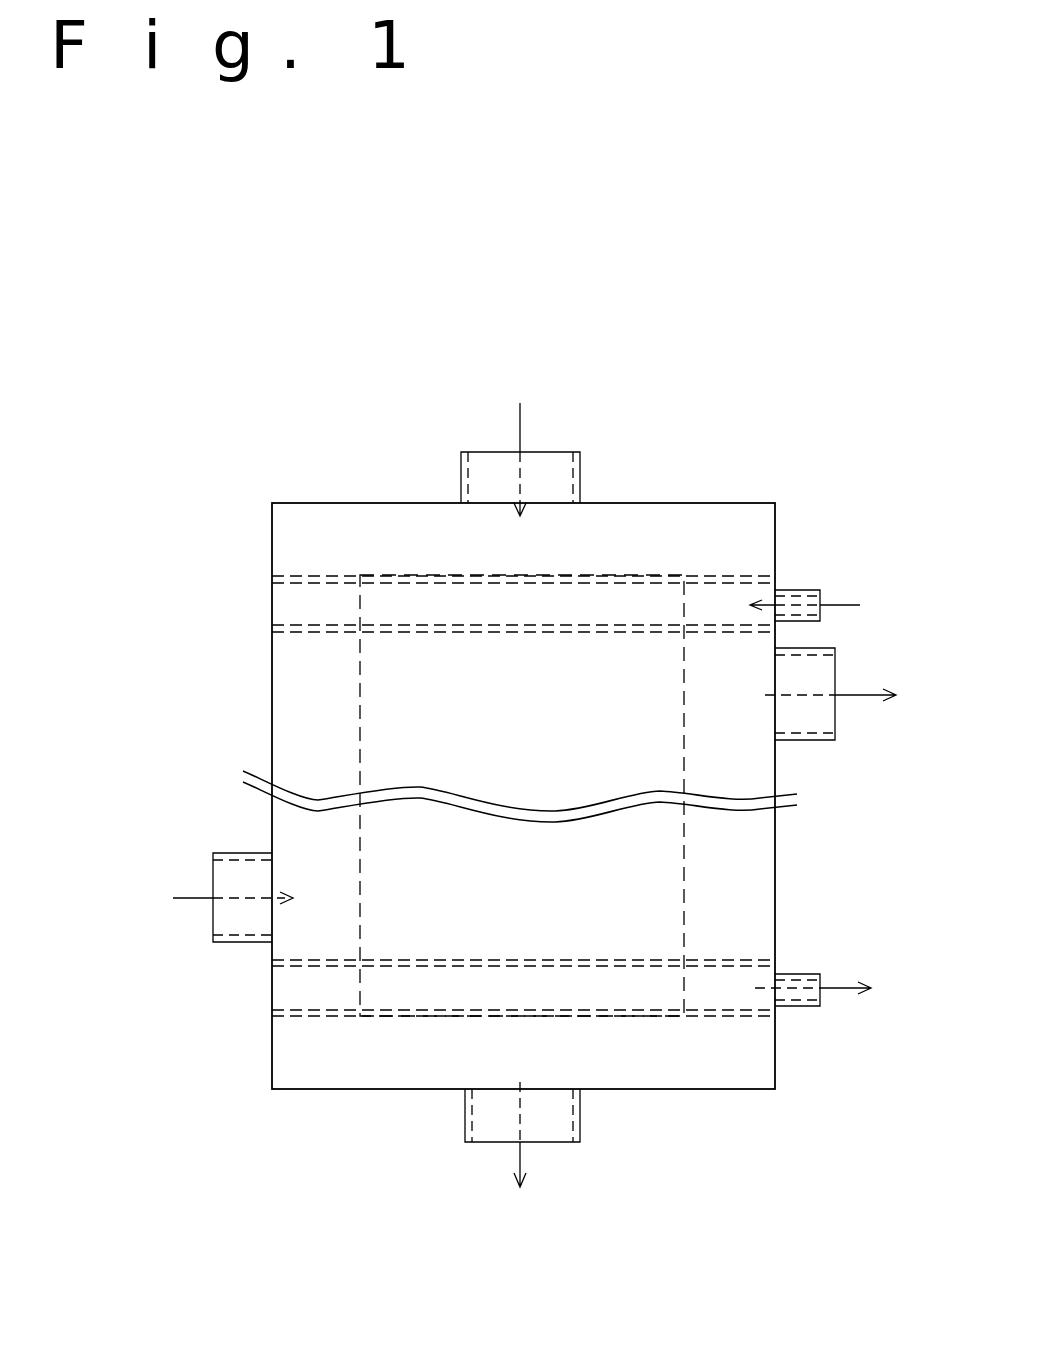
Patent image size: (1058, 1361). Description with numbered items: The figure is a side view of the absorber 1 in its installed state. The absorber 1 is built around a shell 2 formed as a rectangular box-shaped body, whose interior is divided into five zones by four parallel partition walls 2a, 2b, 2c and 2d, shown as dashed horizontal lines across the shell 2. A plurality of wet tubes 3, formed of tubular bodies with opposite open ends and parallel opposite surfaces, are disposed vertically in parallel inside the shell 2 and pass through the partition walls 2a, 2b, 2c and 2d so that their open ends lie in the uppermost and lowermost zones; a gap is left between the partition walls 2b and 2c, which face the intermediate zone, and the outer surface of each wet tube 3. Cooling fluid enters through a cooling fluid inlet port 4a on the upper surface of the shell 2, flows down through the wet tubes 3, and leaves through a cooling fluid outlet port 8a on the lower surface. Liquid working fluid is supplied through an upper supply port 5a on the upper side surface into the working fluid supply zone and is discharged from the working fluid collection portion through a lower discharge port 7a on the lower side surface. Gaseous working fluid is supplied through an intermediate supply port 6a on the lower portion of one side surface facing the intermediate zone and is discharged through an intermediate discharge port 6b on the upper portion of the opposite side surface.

The absorber 1 is at (326, 262).
The shell 2 is at (705, 505).
The partition wall 2a is at (728, 576).
The partition wall 2b is at (310, 623).
The partition wall 2c is at (305, 965).
The partition wall 2d is at (745, 1018).
The wet tubes 3 is at (685, 918).
The cooling fluid inlet port 4a is at (565, 452).
The upper supply port 5a is at (820, 595).
The intermediate supply port 6a is at (213, 935).
The intermediate discharge port 6b is at (835, 735).
The lower discharge port 7a is at (822, 996).
The cooling fluid outlet port 8a is at (565, 1145).